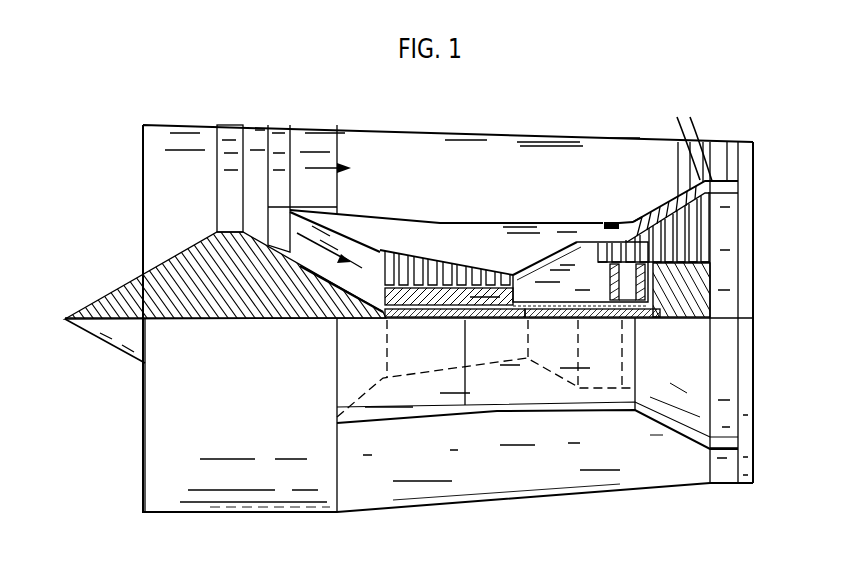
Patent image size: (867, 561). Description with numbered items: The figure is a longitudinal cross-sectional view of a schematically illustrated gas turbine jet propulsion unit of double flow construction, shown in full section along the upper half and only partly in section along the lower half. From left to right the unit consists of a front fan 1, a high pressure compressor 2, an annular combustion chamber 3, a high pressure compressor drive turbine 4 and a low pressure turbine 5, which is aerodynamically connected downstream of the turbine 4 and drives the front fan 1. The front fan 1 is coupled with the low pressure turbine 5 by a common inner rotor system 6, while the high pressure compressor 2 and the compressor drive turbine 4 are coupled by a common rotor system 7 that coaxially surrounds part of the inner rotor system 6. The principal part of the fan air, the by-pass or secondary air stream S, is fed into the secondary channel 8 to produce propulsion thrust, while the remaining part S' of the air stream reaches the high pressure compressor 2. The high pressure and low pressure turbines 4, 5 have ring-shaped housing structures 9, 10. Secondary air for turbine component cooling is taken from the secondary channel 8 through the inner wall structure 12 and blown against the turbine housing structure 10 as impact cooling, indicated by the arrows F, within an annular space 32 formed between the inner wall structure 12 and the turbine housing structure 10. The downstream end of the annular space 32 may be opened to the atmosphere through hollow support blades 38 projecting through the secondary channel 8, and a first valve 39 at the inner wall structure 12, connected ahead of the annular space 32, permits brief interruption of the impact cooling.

The front fan 1 is at (236, 158).
The secondary air stream S is at (328, 126).
The remaining part of the air stream S' is at (303, 301).
The high pressure compressor 2 is at (430, 250).
The annular combustion chamber 3 is at (553, 277).
The high pressure compressor drive turbine 4 is at (600, 245).
The low pressure turbine 5 is at (692, 235).
The inner rotor system 6 is at (448, 320).
The rotor system 7 is at (495, 318).
The secondary channel 8 is at (522, 210).
The housing structure 9 is at (597, 235).
The turbine housing structure 10 is at (633, 217).
The inner wall structure 12 is at (647, 184).
The annular space 32 is at (665, 318).
The support blades 38 is at (742, 142).
The first valve 39 is at (602, 203).
The impact cooling arrows F is at (691, 142).